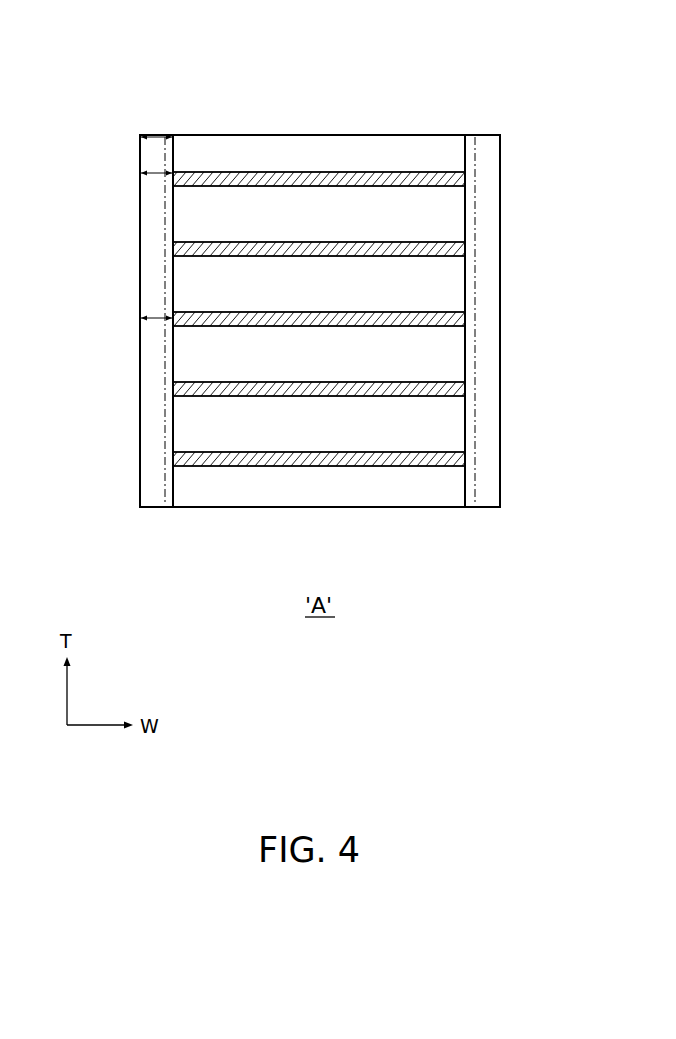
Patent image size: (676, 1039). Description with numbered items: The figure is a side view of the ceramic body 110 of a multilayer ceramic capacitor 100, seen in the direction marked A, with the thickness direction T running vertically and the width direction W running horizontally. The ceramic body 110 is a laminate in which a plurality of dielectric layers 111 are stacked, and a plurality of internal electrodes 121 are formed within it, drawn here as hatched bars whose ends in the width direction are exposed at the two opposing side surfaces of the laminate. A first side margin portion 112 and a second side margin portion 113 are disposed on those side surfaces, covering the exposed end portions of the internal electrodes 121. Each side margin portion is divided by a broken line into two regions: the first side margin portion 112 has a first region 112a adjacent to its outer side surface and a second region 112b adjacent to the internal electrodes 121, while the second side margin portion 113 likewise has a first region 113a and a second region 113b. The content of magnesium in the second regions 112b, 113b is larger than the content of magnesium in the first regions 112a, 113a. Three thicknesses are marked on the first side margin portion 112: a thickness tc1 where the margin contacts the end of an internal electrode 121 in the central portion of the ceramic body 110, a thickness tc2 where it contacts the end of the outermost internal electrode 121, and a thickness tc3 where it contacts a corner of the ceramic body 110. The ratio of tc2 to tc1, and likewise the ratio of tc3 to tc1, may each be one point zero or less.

The multilayer ceramic capacitor 100 is at (352, 31).
The ceramic body 110 is at (372, 134).
The dielectric layers 111 is at (452, 213).
The first side margin portion 112 is at (179, 374).
The first region of first side margin portion 112a is at (147, 492).
The second region of first side margin portion 112b is at (170, 507).
The second side margin portion 113 is at (474, 374).
The first region of second side margin portion 113a is at (492, 490).
The second region of second side margin portion 113b is at (463, 495).
The internal electrodes 121 is at (458, 183).
The thickness of side margin portion at central internal electrode tc1 is at (157, 320).
The thickness of side margin portion at outermost internal electrode tc2 is at (156, 175).
The thickness of side margin portion at corner tc3 is at (157, 139).